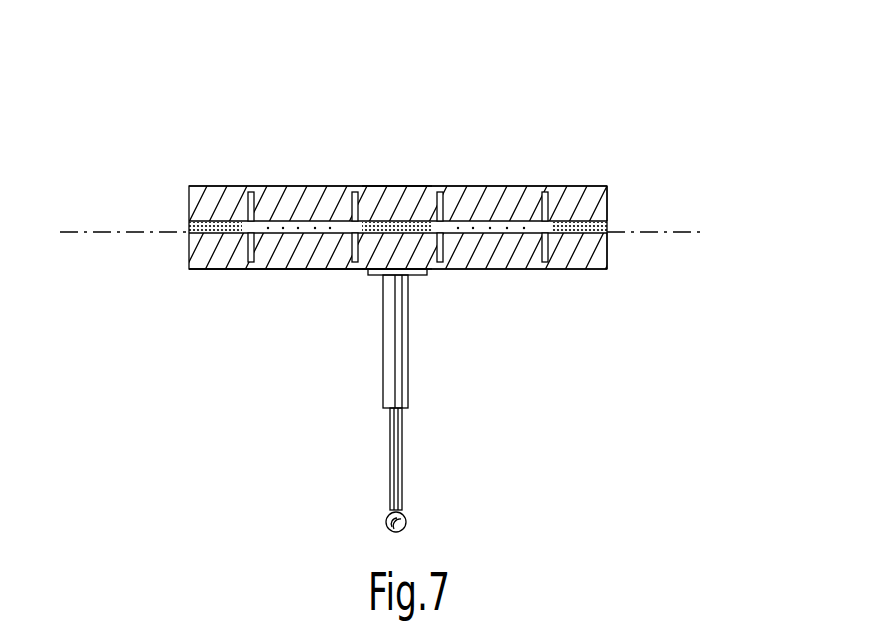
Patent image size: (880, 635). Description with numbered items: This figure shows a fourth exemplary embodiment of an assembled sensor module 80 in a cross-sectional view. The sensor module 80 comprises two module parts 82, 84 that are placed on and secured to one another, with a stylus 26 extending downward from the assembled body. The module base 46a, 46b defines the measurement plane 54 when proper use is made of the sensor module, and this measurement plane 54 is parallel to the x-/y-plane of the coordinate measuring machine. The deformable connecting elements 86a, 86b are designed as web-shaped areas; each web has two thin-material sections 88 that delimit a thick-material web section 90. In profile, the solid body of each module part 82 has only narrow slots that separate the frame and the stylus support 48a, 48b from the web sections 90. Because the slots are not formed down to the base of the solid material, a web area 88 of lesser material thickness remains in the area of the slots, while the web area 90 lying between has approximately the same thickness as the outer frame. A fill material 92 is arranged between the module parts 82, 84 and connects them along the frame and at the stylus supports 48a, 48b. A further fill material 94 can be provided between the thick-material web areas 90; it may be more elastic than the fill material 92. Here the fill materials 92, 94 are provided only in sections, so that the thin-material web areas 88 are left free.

The stylus / probe shaft with ball tip 26 is at (408, 392).
The module base 46a is at (602, 258).
The module base 46b is at (594, 198).
The stylus support 48a is at (405, 251).
The stylus support 48b is at (402, 200).
The measurement plane 54 is at (93, 233).
The sensor module 80 is at (429, 276).
The module part 82 is at (260, 270).
The module part 84 is at (440, 230).
The deformable connecting element 86a is at (305, 252).
The deformable connecting element 86b is at (493, 187).
The thin-material section 88 is at (250, 187).
The thick-material web section 90 is at (316, 195).
The fill material 92 is at (604, 226).
The fill material 94 is at (290, 227).